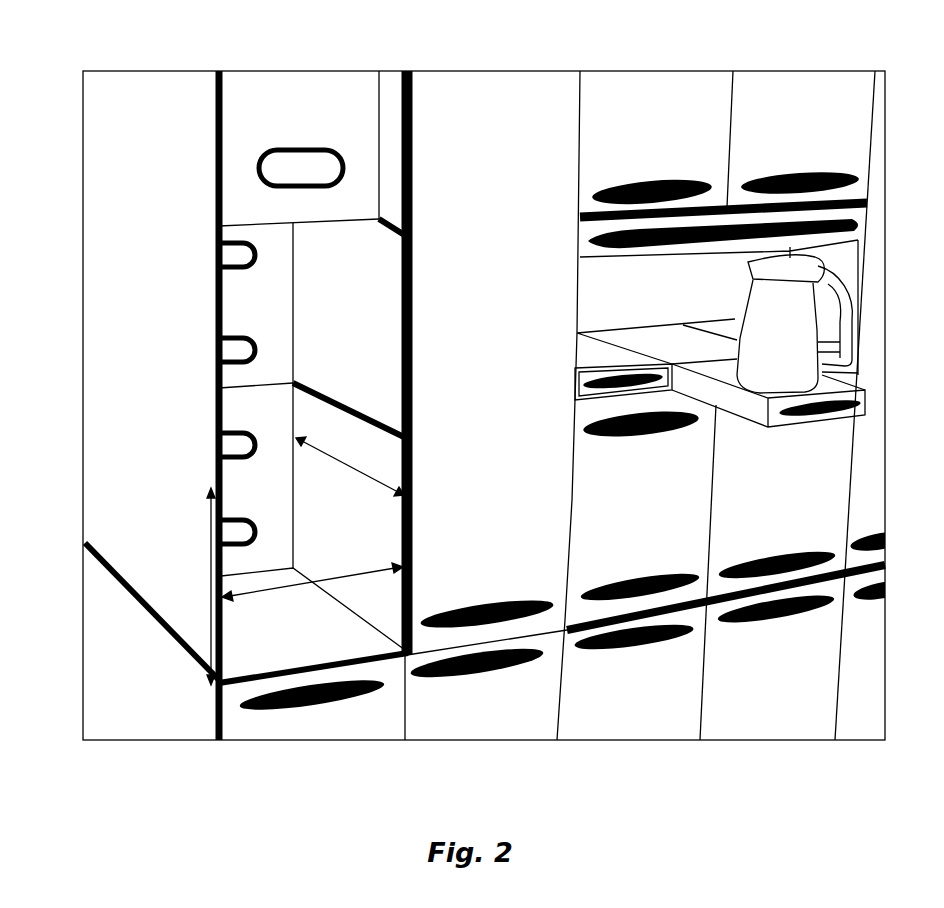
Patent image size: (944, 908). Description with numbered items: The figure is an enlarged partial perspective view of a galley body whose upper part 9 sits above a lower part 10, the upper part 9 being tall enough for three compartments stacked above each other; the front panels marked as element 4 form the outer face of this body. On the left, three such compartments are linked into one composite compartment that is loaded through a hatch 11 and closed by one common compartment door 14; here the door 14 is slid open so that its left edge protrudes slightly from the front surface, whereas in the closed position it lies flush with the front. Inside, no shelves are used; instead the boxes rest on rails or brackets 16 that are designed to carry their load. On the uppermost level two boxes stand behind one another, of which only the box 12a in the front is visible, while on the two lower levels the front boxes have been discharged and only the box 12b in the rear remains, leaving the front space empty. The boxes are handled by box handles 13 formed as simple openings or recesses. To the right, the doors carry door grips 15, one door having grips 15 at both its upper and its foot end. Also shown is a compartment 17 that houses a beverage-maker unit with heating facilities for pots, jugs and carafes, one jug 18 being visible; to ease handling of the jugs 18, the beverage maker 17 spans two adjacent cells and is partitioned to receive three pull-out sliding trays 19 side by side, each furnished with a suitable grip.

The door panel 4 is at (802, 88).
The upper part 9 is at (112, 322).
The lower part 10 is at (116, 679).
The hatch 11 is at (224, 402).
The box in the front 12a is at (233, 160).
The box in the rear 12b is at (235, 300).
The box handles 13 is at (313, 166).
The compartment door 14 is at (547, 520).
The door grips 15 is at (632, 180).
The rails or brackets 16 is at (413, 218).
The compartment for beverage maker 17 is at (610, 316).
The jug 18 is at (755, 309).
The sliding trays 19 is at (783, 428).